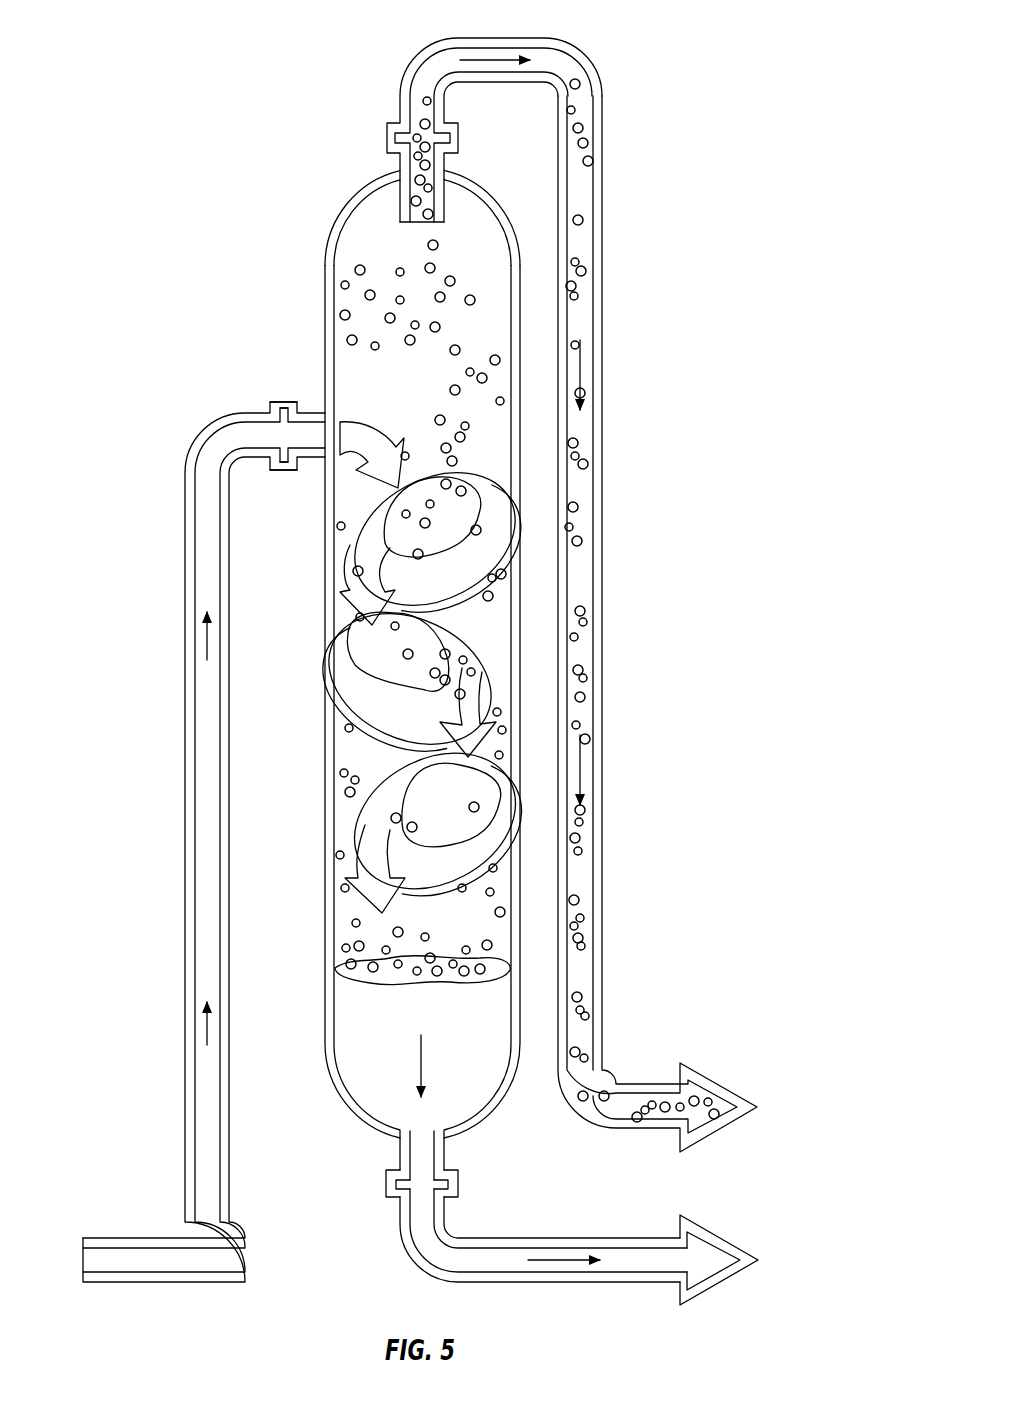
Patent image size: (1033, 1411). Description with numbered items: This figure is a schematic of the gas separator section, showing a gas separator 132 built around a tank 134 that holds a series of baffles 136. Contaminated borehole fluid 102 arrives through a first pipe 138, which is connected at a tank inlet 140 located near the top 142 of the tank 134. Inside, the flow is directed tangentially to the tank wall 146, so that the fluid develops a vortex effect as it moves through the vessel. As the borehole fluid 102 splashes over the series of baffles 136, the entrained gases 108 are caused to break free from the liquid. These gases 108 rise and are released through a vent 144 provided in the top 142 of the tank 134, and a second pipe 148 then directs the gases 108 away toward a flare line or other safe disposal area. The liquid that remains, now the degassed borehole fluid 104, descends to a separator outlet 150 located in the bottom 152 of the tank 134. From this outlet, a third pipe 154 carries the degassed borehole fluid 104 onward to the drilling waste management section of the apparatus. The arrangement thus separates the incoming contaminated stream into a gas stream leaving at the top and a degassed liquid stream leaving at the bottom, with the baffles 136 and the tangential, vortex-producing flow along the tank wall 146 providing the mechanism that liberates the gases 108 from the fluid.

The contaminated borehole fluid 102 is at (185, 1035).
The degassed borehole fluid 104 is at (568, 1262).
The entrained gases 108 is at (438, 242).
The gas separator 132 is at (325, 248).
The tank 134 is at (325, 305).
The baffles 136 is at (372, 528).
The first pipe 138 is at (185, 527).
The tank inlet 140 is at (313, 412).
The top of the tank 142 is at (348, 182).
The vent 144 is at (416, 170).
The tank wall 146 is at (378, 645).
The second pipe 148 is at (583, 219).
The separator outlet 150 is at (398, 1150).
The bottom of the tank 152 is at (460, 1135).
The third pipe 154 is at (540, 1218).